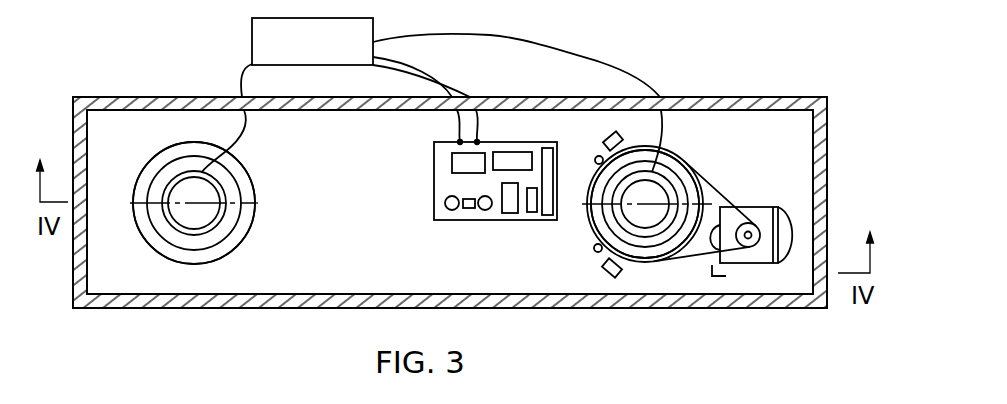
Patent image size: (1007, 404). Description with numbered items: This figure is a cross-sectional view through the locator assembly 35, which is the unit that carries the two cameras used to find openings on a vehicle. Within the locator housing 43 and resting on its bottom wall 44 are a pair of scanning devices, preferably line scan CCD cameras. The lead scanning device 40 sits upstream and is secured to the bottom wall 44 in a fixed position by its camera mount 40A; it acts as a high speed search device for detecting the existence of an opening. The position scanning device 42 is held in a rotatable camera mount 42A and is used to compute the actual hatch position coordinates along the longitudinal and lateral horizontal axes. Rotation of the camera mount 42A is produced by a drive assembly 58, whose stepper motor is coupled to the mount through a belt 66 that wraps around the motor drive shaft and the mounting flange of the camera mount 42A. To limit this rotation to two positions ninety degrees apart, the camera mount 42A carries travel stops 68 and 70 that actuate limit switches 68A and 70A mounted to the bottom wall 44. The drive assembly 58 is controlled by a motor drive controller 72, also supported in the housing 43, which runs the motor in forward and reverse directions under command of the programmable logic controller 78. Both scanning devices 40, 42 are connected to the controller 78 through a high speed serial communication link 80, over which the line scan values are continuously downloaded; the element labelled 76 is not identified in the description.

The locator assembly 35 is at (768, 77).
The lead scanning device 40 is at (236, 176).
The camera mount 40A is at (248, 250).
The position scanning device 42 is at (674, 175).
The camera mount 42A is at (578, 224).
The locator housing 43 is at (831, 142).
The bottom wall 44 is at (800, 143).
The drive assembly 58 is at (768, 189).
The belt 66 is at (716, 186).
The travel stop 68 is at (594, 249).
The limit switch 68A is at (618, 276).
The travel stop 70 is at (597, 157).
The limit switch 70A is at (620, 137).
The motor drive controller 72 is at (503, 126).
The connector 76 is at (545, 150).
The programmable logic controller 78 is at (392, 14).
The high speed serial communication link 80 is at (535, 47).